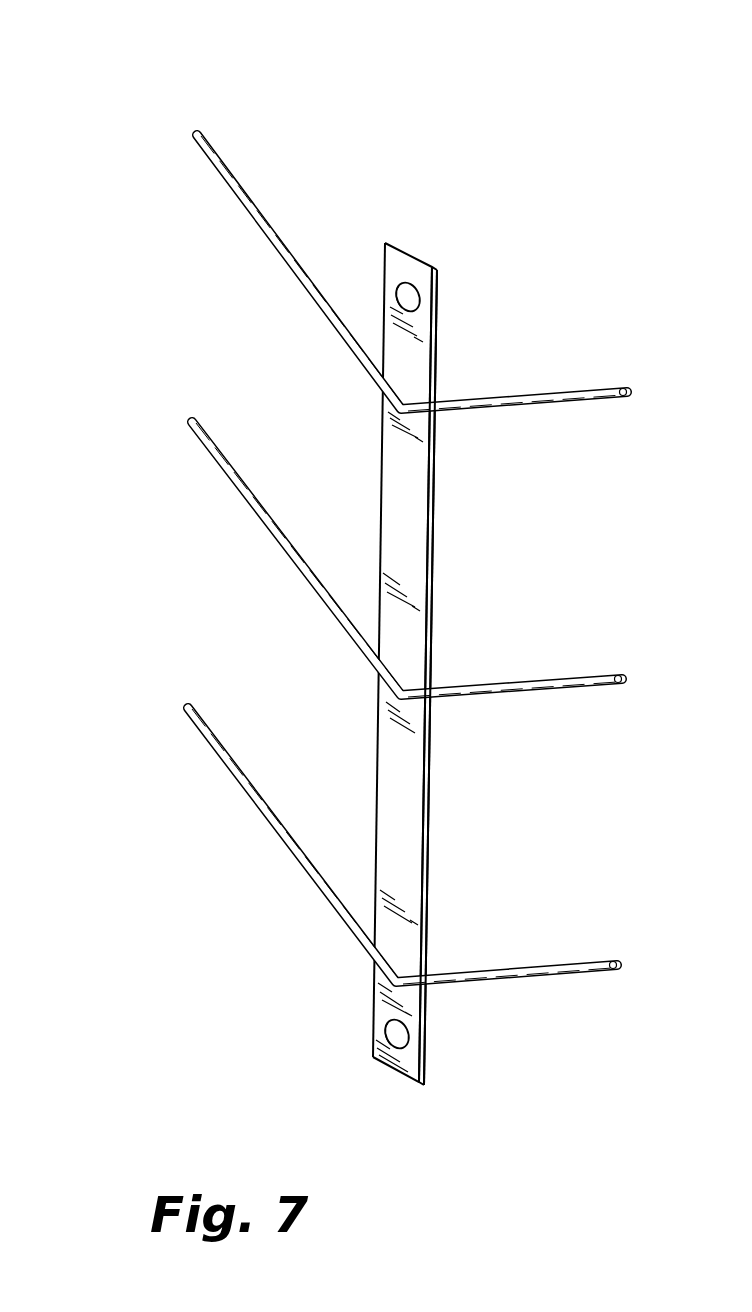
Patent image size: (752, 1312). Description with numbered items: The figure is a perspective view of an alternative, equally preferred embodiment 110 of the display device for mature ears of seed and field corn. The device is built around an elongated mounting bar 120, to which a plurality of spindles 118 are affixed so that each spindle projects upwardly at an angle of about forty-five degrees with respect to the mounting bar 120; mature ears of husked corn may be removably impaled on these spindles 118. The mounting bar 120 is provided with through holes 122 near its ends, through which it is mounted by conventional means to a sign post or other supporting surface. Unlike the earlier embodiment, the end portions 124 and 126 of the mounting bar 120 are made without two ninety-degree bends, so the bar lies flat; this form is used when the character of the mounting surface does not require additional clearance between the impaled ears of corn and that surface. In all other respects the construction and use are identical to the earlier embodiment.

The display device for mature ears of seed and field corn 110 is at (130, 127).
The spindle 118 is at (285, 258).
The mounting bar 120 is at (415, 532).
The through hole 122 is at (410, 292).
The end portion of mounting bar 124 is at (393, 1092).
The end portion of mounting bar 126 is at (408, 238).